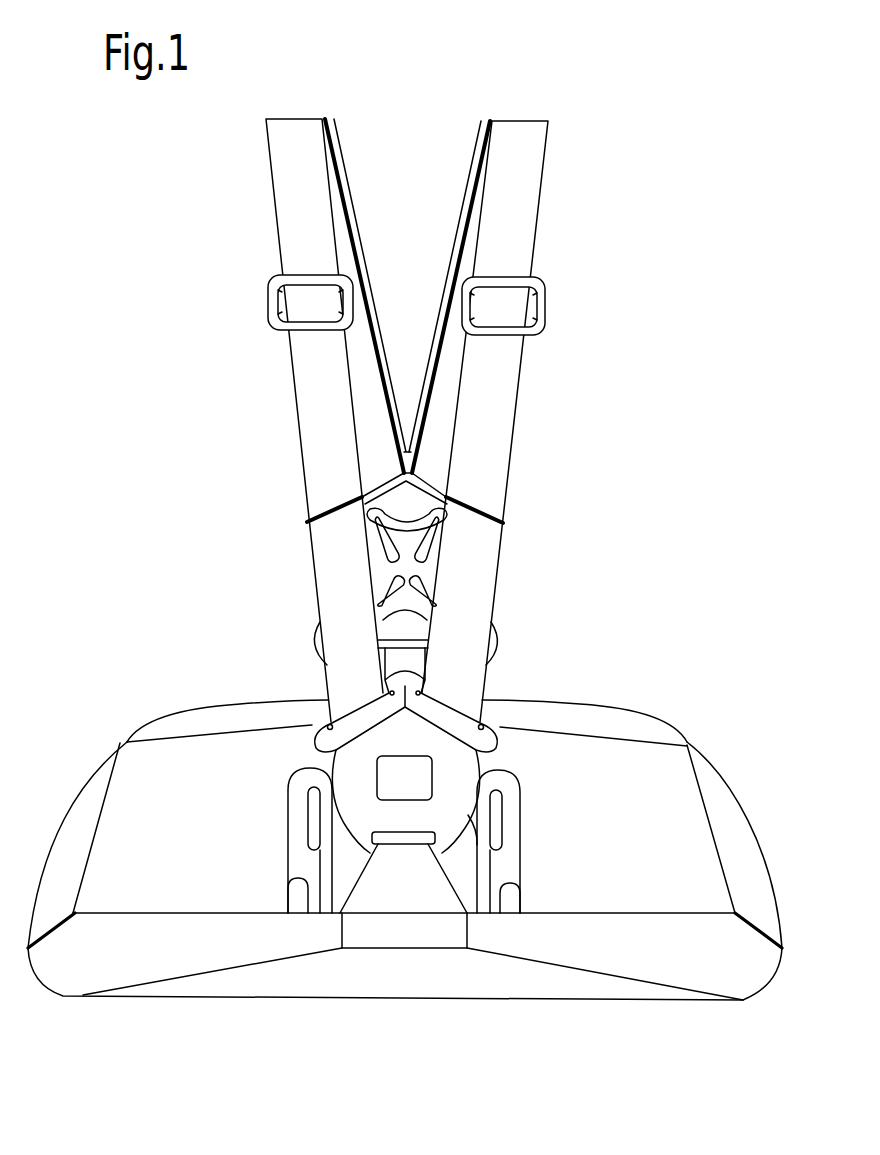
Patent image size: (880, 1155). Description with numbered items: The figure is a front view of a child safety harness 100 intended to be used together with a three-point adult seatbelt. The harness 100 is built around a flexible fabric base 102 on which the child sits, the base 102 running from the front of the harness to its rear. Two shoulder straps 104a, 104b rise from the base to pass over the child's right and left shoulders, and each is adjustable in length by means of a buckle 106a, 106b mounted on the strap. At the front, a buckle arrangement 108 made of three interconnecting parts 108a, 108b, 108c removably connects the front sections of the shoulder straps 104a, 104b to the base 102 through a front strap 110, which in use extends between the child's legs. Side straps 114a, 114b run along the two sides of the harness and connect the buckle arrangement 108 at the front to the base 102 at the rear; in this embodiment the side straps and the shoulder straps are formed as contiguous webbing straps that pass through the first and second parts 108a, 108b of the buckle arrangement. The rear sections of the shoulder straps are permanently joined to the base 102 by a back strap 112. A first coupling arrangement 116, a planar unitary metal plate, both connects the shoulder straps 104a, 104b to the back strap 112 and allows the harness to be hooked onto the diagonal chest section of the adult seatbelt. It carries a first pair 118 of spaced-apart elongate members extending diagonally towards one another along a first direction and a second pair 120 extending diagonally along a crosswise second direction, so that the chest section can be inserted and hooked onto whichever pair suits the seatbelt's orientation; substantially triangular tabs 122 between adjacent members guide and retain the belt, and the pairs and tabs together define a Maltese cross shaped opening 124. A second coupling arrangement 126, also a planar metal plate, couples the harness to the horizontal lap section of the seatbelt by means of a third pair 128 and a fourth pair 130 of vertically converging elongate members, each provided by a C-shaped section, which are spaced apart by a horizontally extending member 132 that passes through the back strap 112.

The child safety harness 100 is at (645, 141).
The base 102 is at (670, 958).
The shoulder strap 104a is at (303, 402).
The shoulder strap 104b is at (497, 464).
The buckle 106a is at (277, 297).
The buckle 106b is at (537, 303).
The buckle arrangement 108 is at (345, 789).
The first part of buckle arrangement 108a is at (322, 740).
The second part of buckle arrangement 108b is at (488, 728).
The third part of buckle arrangement 108c is at (462, 768).
The front strap 110 is at (372, 932).
The back strap 112 is at (462, 878).
The side strap 114a is at (67, 850).
The side strap 114b is at (733, 842).
The first coupling arrangement 116 is at (397, 500).
The first pair of spaced-apart elongate members 118 is at (423, 552).
The second pair of spaced-apart elongate members 120 is at (380, 548).
The triangular tab 122 is at (410, 520).
The Maltese cross shaped opening 124 is at (398, 603).
The second coupling arrangement 126 is at (493, 780).
The third pair of spaced-apart elongate members 128 is at (295, 892).
The fourth pair of spaced-apart elongate members 130 is at (515, 903).
The horizontally extending member 132 is at (470, 817).